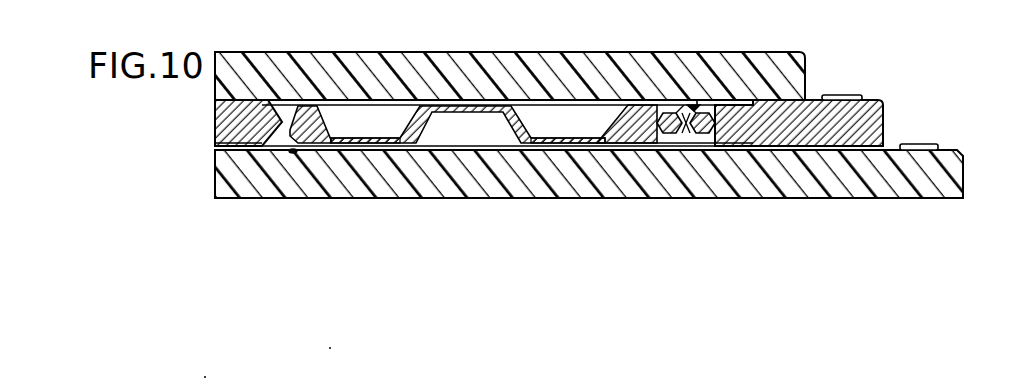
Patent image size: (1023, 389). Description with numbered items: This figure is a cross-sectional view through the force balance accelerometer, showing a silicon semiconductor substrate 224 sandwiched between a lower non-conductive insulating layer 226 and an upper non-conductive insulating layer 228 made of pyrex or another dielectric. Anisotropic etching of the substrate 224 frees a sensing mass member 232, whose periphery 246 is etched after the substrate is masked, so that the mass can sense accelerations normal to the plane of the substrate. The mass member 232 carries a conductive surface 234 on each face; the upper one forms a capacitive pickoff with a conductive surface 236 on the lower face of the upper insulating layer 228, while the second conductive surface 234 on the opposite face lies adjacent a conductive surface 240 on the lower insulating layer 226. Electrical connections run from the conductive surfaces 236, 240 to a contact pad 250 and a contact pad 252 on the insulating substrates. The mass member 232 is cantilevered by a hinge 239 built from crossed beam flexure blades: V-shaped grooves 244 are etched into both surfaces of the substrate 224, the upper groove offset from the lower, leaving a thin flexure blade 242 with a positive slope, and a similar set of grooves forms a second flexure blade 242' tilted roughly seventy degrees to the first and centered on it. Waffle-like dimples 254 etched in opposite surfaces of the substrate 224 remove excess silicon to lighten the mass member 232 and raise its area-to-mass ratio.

The semiconductor substrate 224 is at (883, 101).
The lower non-conductive insulating layer 226 is at (958, 150).
The upper non-conductive insulating layer 228 is at (805, 56).
The sensing mass member 232 is at (215, 148).
The conductive surface 234 is at (403, 106).
The conductive surface 236 is at (320, 98).
The hinge 239 is at (702, 108).
The conductive surface 240 is at (290, 152).
The flexure blade 242 is at (700, 66).
The second flexure blade 242' is at (651, 69).
The V-shaped groove 244 is at (627, 100).
The periphery 246 is at (270, 76).
The contact pad 250 is at (927, 144).
The contact pad 252 is at (843, 95).
The waffle-like dimple 254 is at (348, 118).